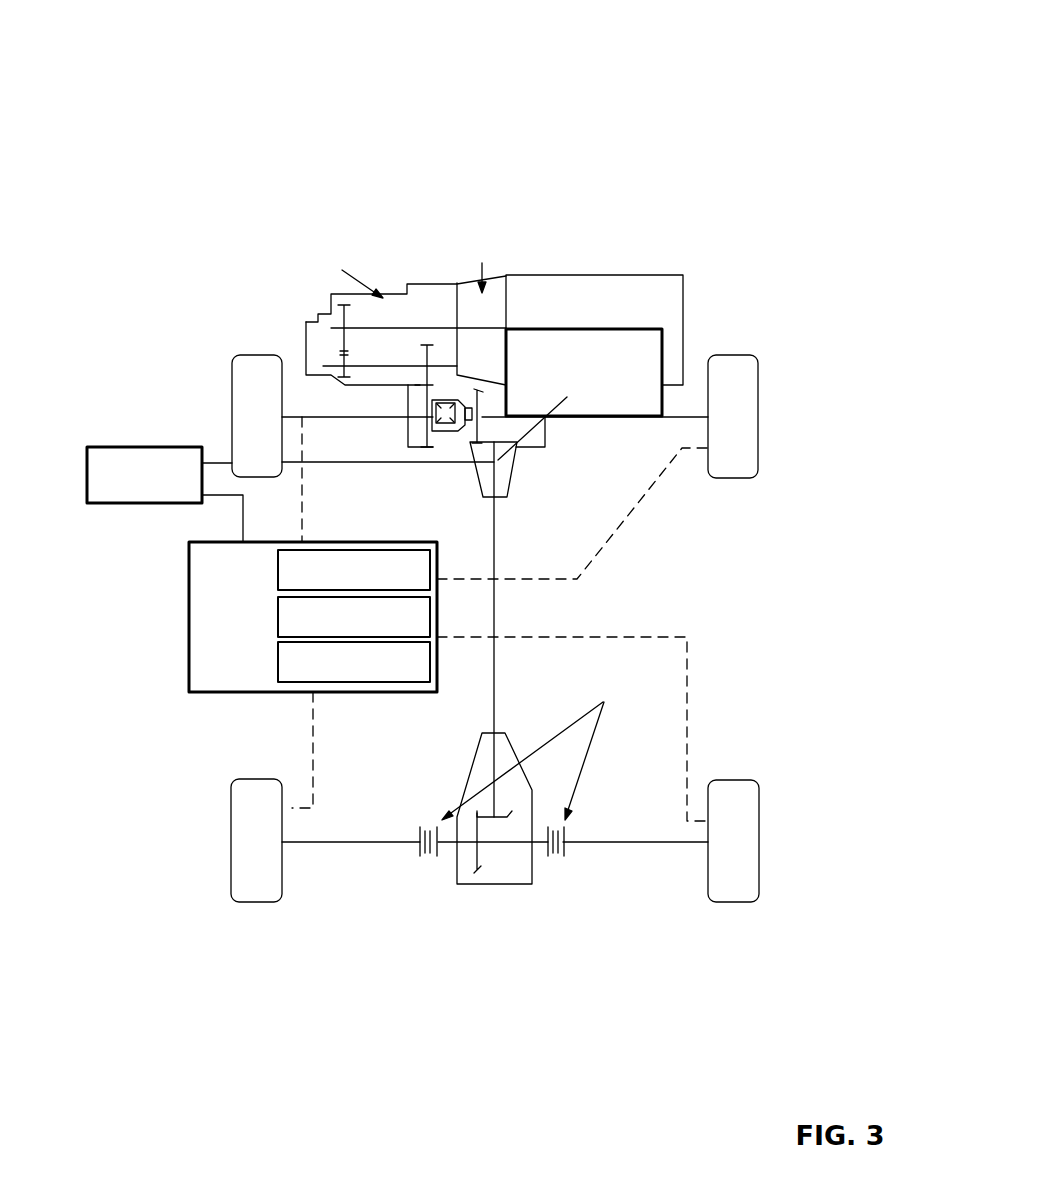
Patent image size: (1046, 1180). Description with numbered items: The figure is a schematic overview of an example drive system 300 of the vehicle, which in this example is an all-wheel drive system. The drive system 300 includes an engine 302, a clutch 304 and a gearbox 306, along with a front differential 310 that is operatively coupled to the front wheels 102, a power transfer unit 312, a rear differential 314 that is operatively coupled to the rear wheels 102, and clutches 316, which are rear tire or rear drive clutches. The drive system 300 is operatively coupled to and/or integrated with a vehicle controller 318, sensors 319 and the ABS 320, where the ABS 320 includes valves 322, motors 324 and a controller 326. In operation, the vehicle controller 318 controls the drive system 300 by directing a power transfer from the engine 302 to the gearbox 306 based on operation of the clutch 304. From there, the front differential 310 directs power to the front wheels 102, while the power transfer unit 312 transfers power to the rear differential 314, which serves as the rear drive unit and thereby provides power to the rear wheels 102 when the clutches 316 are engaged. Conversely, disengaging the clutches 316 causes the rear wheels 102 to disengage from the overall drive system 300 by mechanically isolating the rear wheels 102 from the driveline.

The drive system 300 is at (826, 36).
The wheels 102 is at (232, 380).
The engine 302 is at (633, 275).
The clutch 304 is at (492, 297).
The gearbox 306 is at (305, 337).
The front differential 310 is at (438, 455).
The power transfer unit 312 is at (498, 445).
The rear differential 314 is at (476, 797).
The clutches 316 is at (430, 858).
The vehicle controller 318 is at (663, 345).
The sensors 319 is at (117, 447).
The ABS 320 is at (344, 599).
The valves 322 is at (430, 570).
The motors 324 is at (430, 613).
The controller 326 is at (278, 658).